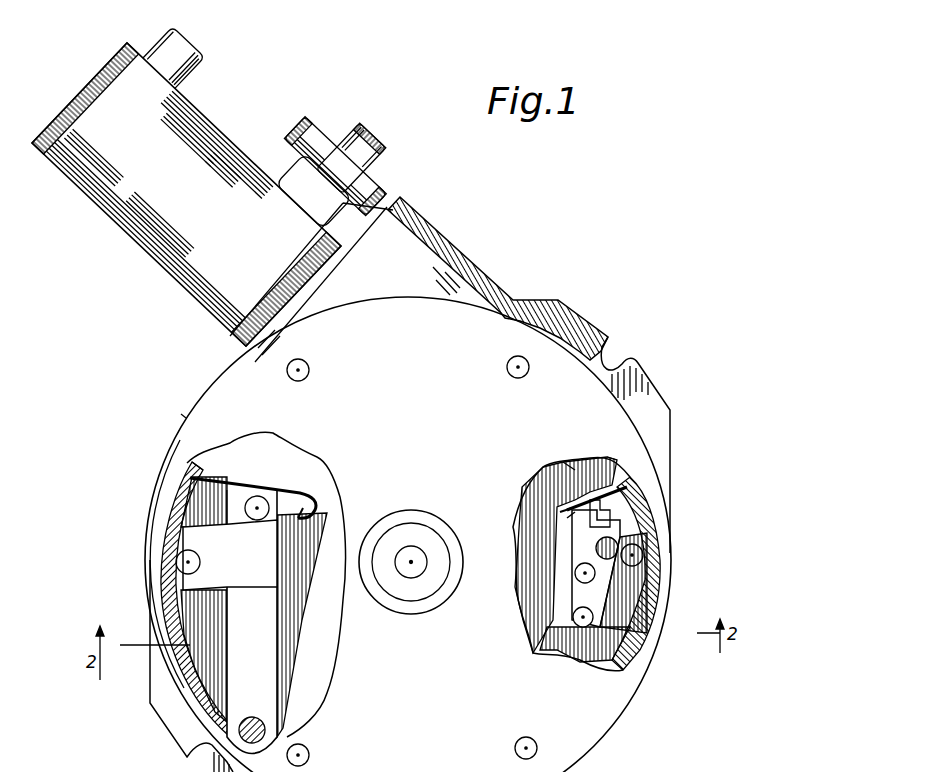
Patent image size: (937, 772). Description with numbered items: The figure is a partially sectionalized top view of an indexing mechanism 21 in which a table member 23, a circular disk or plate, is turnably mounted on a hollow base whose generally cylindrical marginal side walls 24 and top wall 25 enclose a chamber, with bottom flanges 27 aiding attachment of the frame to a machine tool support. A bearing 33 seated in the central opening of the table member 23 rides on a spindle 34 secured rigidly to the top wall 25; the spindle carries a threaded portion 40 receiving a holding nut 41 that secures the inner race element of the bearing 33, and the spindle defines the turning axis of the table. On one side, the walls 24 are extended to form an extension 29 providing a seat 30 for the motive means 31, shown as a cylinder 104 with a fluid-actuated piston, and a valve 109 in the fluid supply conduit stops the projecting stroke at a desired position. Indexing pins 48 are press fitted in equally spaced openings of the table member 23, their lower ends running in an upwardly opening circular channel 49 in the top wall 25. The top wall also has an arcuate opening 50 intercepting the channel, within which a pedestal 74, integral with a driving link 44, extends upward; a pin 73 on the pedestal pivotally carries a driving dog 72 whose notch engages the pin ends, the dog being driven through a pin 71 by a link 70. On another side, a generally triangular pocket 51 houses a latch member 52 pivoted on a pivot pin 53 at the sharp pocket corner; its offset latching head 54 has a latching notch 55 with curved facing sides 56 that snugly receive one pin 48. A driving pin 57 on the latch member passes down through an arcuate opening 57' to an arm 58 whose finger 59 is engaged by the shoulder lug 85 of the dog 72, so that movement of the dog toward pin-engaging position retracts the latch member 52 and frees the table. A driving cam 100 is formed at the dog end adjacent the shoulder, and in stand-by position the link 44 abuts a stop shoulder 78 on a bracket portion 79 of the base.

The indexing mechanism 21 is at (186, 418).
The table member 23 is at (602, 722).
The marginal side walls 24 is at (187, 477).
The top wall 25 is at (330, 643).
The bottom flanges 27 is at (655, 402).
The extension 29 is at (452, 240).
The seat 30 is at (317, 282).
The motive means 31 is at (142, 260).
The bearing 33 is at (412, 513).
The spindle 34 is at (422, 545).
The threaded portion 40 is at (412, 573).
The holding nut 41 is at (397, 528).
The driving link 44 is at (627, 610).
The indexing pins 48 is at (507, 367).
The circular channel 49 is at (210, 468).
The arcuate opening 50 is at (615, 470).
The pocket 51 is at (254, 607).
The latch member 52 is at (252, 622).
The pivot pin 53 is at (250, 722).
The latching head 54 is at (230, 555).
The latching notch 55 is at (202, 553).
The facing sides 56 is at (167, 523).
The driving pin 57 is at (253, 490).
The arcuate opening 57' is at (333, 519).
The arm 58 is at (283, 500).
The finger 59 is at (600, 500).
The link 70 is at (555, 540).
The pin 71 is at (575, 573).
The driving dog 72 is at (597, 555).
The pin 73 is at (573, 618).
The pedestal 74 is at (600, 627).
The stop shoulder 78 is at (647, 530).
The bracket portion 79 is at (635, 507).
The shoulder lug 85 is at (565, 467).
The driving cam 100 is at (567, 518).
The cylinder 104 is at (227, 138).
The valve 109 is at (340, 133).